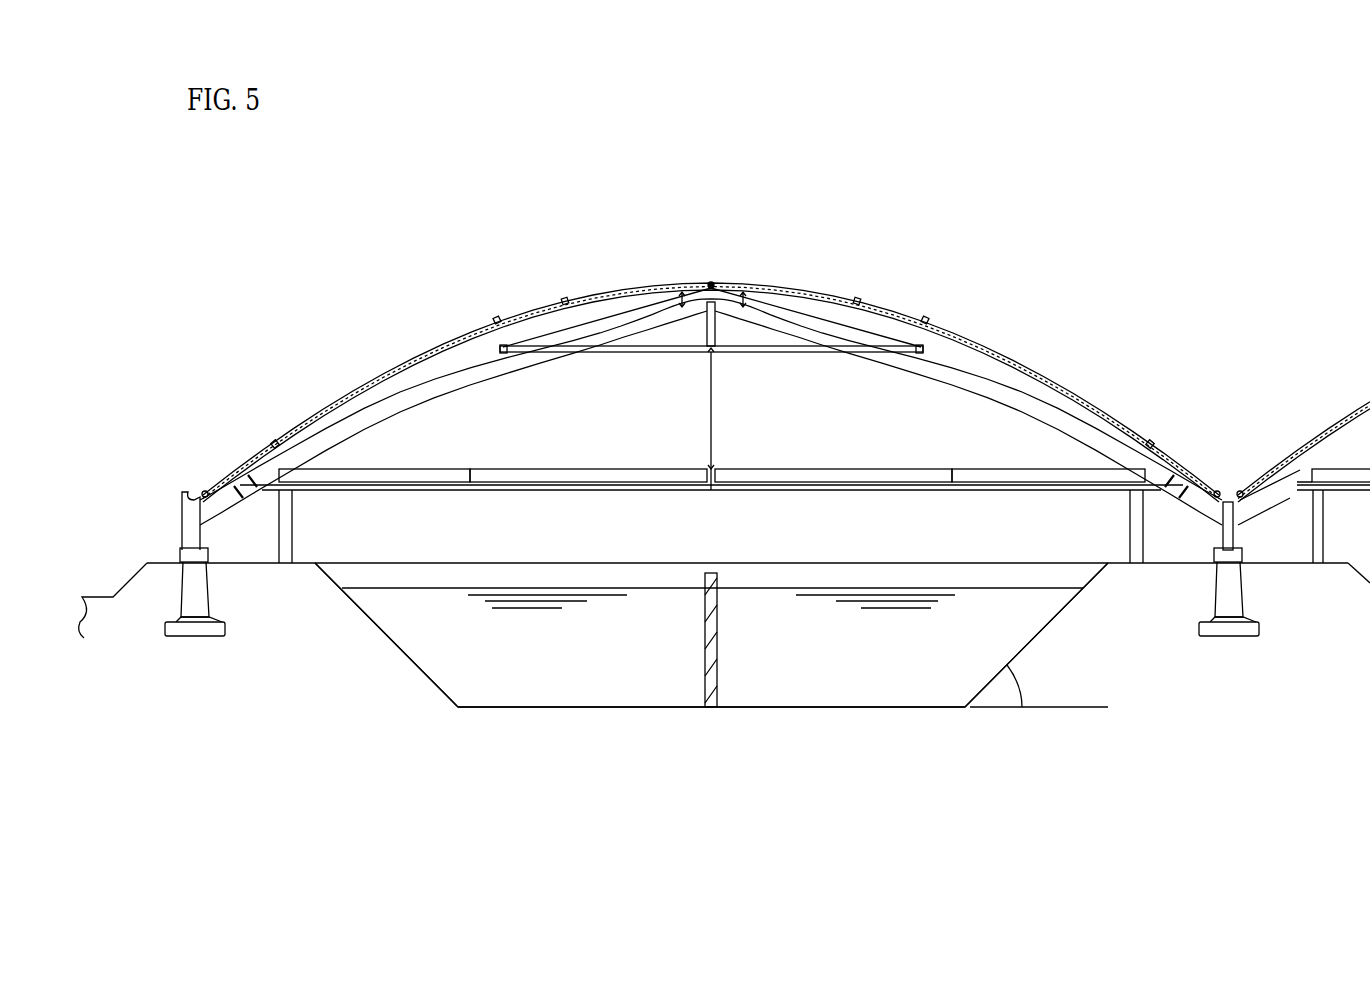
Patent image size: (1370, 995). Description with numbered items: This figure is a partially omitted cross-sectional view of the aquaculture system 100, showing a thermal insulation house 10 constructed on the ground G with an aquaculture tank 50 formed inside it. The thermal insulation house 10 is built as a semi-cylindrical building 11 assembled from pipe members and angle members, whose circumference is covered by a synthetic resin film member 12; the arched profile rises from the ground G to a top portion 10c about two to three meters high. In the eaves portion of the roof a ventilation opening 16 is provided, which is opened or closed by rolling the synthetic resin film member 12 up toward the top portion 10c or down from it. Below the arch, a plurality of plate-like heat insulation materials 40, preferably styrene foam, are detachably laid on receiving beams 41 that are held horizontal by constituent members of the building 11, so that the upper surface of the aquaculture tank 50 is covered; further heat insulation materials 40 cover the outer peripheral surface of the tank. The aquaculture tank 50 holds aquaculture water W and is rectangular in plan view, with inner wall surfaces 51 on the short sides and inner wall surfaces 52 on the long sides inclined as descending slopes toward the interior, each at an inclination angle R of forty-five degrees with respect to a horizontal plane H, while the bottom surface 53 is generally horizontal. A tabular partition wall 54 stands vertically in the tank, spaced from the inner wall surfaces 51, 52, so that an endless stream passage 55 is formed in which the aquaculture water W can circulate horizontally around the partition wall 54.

The aquaculture system 100 is at (903, 237).
The thermal insulation house 10 is at (441, 346).
The top portion 10c is at (713, 281).
The building 11 is at (947, 363).
The synthetic resin film member 12 is at (536, 312).
The heat insulation material 40 is at (405, 469).
The receiving beam 41 is at (605, 492).
The ventilation opening 16 is at (268, 493).
The ground G is at (152, 562).
The aquaculture tank 50 is at (384, 636).
The inner wall surface 51 is at (772, 578).
The aquaculture water W is at (541, 590).
The inner wall surface 52 is at (428, 673).
The bottom surface 53 is at (805, 706).
The partition wall 54 is at (704, 633).
The endless stream passage 55 is at (596, 683).
The inclination angle R is at (1020, 690).
The horizontal plane H is at (1094, 707).